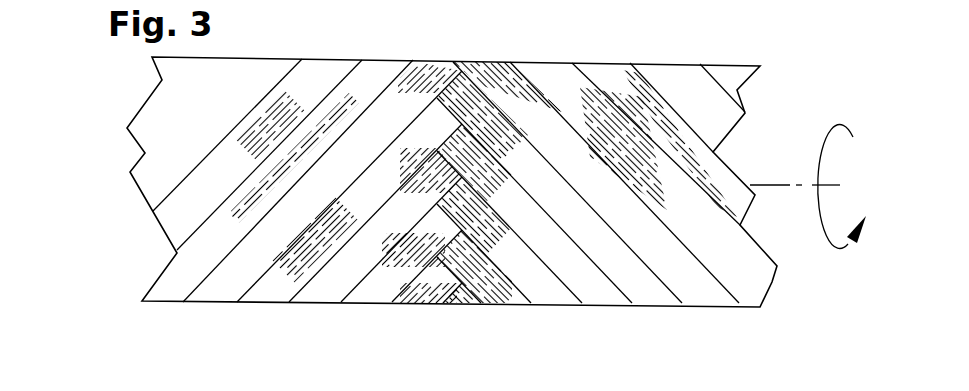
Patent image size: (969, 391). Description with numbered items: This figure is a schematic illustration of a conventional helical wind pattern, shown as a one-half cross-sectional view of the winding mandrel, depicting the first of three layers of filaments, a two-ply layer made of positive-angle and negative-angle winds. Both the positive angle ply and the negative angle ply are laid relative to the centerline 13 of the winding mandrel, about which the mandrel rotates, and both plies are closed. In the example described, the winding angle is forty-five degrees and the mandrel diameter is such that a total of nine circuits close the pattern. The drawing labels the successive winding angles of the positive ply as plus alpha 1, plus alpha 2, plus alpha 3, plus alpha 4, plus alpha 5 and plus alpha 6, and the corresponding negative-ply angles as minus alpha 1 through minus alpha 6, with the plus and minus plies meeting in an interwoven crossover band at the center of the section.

The centerline 13 is at (776, 183).
The fiber layer pair at winding angle ±α 1 is at (463, 204).
The fiber layer pair at winding angle ±α 2 is at (464, 205).
The fiber layer pair at winding angle ±α 3 is at (464, 223).
The fiber layer pair at winding angle ±α 4 is at (463, 250).
The fiber layer pair at winding angle ±α 5 is at (463, 248).
The fiber layer pair at winding angle ±α6 (crossover region) 6 is at (480, 222).